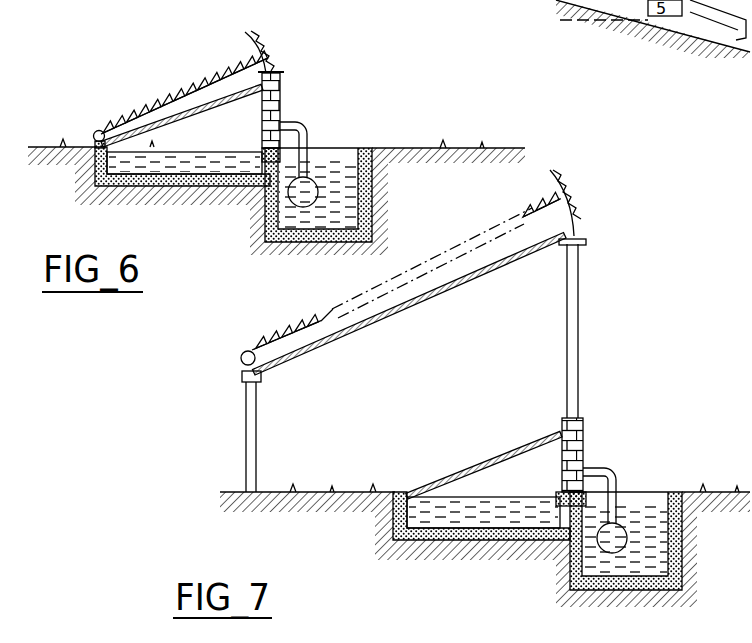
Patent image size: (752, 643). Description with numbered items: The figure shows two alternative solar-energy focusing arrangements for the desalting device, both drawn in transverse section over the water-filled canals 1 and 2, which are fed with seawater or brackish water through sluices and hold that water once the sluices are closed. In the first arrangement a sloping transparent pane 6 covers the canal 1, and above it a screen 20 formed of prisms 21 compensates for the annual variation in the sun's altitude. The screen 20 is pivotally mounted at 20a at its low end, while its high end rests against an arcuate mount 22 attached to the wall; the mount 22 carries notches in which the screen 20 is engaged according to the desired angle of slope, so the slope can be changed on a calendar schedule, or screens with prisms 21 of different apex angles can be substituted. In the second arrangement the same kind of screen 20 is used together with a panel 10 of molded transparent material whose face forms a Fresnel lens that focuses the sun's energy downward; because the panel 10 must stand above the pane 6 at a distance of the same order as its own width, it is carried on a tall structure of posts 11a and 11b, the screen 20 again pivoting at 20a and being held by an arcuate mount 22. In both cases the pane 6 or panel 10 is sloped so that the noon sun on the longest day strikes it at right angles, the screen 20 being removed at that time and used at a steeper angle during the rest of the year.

In FIG. 6, the canal 1 is at (174, 170).
In FIG. 7, the canal 1 is at (478, 513).
In FIG. 6, the canal 2 is at (348, 150).
In FIG. 7, the canal 2 is at (654, 500).
In FIG. 6, the pane 6 is at (198, 114).
In FIG. 7, the pane 6 is at (485, 462).
In FIG. 7, the panel 10 is at (413, 300).
In FIG. 7, the post 11a is at (577, 321).
In FIG. 7, the post 11b is at (246, 443).
In FIG. 6, the screen 20 is at (181, 90).
In FIG. 7, the screen 20 is at (292, 331).
In FIG. 6, the pivot mounting 20a is at (96, 131).
In FIG. 7, the pivot mounting 20a is at (240, 357).
In FIG. 6, the prisms 21 is at (119, 127).
In FIG. 6, the arcuate mount 22 is at (262, 33).
In FIG. 7, the arcuate mount 22 is at (590, 208).